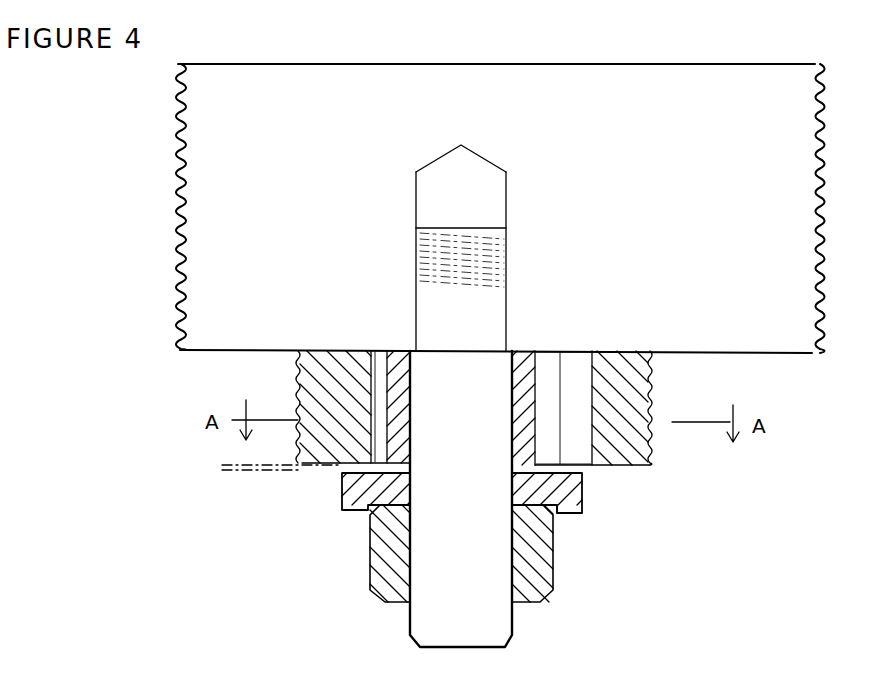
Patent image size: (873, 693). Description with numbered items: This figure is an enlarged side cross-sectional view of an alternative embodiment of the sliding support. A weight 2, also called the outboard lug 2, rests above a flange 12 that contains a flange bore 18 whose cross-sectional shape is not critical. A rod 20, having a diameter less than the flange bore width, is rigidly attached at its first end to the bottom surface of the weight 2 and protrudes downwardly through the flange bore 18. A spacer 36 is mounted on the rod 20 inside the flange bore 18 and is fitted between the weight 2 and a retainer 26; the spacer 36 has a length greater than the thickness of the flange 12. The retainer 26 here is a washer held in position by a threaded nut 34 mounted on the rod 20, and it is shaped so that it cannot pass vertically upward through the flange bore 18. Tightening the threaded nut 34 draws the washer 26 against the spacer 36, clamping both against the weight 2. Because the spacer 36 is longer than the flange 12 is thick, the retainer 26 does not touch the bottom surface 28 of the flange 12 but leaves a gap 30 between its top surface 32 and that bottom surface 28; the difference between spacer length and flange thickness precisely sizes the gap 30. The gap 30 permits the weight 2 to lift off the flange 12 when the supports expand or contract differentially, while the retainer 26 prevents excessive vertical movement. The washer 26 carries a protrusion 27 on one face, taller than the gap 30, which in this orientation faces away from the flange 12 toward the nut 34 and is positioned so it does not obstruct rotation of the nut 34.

The weight 2 is at (776, 104).
The flange 12 is at (650, 463).
The flange bore 18 is at (380, 361).
The rod 20 is at (512, 645).
The retainer 26 is at (584, 490).
The protrusion 27 is at (582, 515).
The bottom surface 28 is at (643, 470).
The gap 30 is at (226, 467).
The top surface 32 is at (548, 470).
The threaded nut 34 is at (553, 578).
The spacer 36 is at (387, 397).